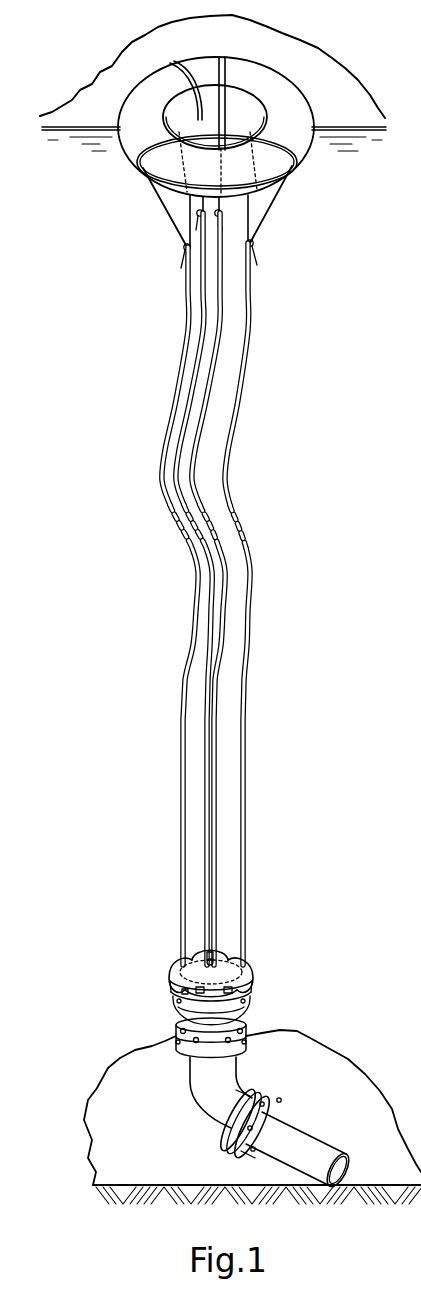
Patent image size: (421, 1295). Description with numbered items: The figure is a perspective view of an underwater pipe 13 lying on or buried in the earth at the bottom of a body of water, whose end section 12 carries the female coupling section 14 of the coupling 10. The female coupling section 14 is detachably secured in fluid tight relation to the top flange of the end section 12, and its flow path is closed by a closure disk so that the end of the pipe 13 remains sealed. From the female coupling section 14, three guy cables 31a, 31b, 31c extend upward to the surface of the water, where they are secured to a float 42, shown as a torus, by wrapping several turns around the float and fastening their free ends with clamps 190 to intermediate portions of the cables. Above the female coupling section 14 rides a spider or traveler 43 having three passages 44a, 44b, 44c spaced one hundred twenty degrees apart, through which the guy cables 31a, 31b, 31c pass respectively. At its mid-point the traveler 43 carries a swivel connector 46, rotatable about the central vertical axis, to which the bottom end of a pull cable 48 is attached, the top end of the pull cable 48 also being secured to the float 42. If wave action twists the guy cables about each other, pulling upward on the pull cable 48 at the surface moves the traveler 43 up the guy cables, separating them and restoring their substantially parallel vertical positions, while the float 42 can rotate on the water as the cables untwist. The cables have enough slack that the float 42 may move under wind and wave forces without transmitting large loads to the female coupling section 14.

The coupling 10 is at (262, 1010).
The end section 12 is at (233, 1087).
The pipe 13 is at (305, 1129).
The female coupling section 14 is at (180, 1033).
The float 42 is at (312, 150).
The clamps 190 is at (256, 244).
The guy cable 31a is at (195, 613).
The guy cable 31b is at (247, 388).
The guy cable 31c is at (216, 341).
The pull cable 48 is at (207, 662).
The traveler 43 is at (176, 984).
The passage 44a is at (178, 977).
The passage 44b is at (248, 975).
The passage 44c is at (212, 955).
The swivel connector 46 is at (214, 958).